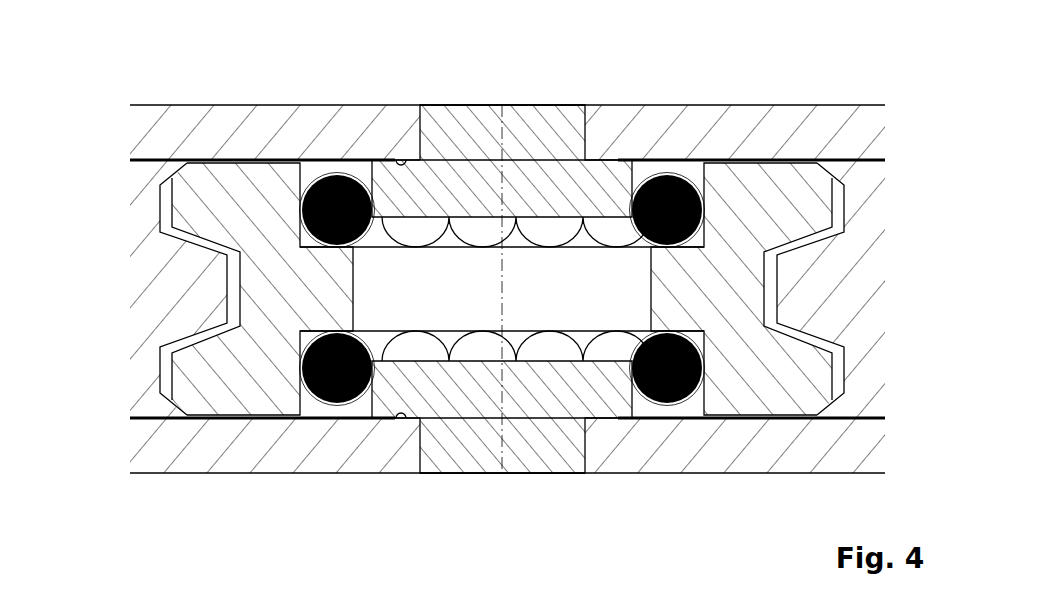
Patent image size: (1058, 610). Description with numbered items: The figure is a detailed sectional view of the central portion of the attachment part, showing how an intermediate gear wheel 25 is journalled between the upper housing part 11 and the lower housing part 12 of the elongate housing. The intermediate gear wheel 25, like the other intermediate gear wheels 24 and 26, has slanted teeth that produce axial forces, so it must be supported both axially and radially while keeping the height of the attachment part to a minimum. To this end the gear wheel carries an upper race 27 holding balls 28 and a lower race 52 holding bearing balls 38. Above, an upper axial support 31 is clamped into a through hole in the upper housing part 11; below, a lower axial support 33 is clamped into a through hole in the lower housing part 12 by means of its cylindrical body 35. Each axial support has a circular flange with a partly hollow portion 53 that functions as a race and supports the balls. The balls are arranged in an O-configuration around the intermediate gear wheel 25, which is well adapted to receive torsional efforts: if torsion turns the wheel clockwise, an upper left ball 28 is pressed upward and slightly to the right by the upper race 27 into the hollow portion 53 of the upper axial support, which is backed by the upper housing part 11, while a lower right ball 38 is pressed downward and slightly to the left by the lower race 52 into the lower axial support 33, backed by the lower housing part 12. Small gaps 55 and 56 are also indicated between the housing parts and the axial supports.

The upper housing part 11 is at (708, 120).
The lower housing part 12 is at (640, 468).
The intermediate gear wheel 24 is at (135, 290).
The intermediate gear wheel 25 is at (795, 197).
The intermediate gear wheel 26 is at (860, 287).
The upper race 27 is at (292, 236).
The balls 28 is at (652, 182).
The upper axial support 31 is at (480, 180).
The lower axial support 33 is at (465, 395).
The cylindrical body 35 is at (525, 110).
The bearing balls 38 is at (320, 392).
The lower race 52 is at (708, 319).
The hollow portion 53 is at (372, 187).
The upper gap 55 is at (418, 132).
The lower gap 56 is at (418, 450).